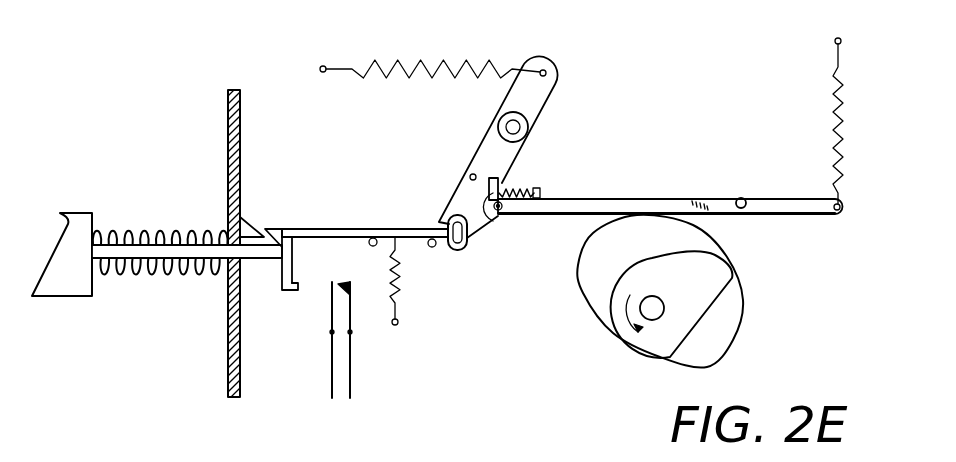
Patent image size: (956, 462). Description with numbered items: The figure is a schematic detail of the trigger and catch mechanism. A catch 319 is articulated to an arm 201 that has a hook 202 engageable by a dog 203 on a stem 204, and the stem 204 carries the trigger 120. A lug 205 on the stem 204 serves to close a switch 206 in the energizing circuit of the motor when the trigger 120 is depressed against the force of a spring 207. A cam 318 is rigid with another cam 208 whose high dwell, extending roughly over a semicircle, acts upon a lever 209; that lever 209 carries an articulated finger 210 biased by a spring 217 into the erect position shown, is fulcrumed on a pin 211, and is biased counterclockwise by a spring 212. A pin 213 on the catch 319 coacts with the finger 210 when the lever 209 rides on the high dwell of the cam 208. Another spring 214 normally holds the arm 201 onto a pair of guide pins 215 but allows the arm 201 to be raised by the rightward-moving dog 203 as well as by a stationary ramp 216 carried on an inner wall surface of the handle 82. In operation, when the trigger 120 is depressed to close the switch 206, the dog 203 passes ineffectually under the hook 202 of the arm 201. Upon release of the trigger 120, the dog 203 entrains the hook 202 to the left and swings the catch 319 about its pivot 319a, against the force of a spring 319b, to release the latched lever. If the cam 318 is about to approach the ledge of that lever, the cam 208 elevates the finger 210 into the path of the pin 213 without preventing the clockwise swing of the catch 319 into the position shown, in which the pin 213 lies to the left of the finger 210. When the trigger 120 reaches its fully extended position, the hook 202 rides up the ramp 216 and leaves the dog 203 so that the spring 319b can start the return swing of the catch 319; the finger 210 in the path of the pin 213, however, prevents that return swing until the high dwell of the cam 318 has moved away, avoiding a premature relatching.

The handle 82 is at (228, 380).
The trigger 120 is at (62, 290).
The arm 201 is at (323, 228).
The hook 202 is at (275, 227).
The dog 203 is at (292, 243).
The stem 204 is at (153, 253).
The lug 205 is at (278, 290).
The switch 206 is at (338, 312).
The spring 207 is at (173, 204).
The cam 208 is at (707, 350).
The lever 209 is at (592, 203).
The finger 210 is at (492, 225).
The pin 211 is at (742, 198).
The spring 212 is at (836, 108).
The pin 213 is at (470, 177).
The spring 214 is at (402, 285).
The guide pins 215 is at (371, 246).
The ramp 216 is at (245, 227).
The spring 217 is at (512, 186).
The cam 318 is at (707, 272).
The catch 319 is at (548, 96).
The pivot 319a is at (505, 127).
The spring 319b is at (425, 62).